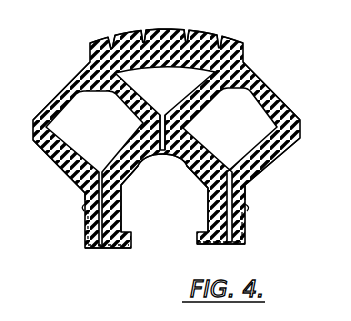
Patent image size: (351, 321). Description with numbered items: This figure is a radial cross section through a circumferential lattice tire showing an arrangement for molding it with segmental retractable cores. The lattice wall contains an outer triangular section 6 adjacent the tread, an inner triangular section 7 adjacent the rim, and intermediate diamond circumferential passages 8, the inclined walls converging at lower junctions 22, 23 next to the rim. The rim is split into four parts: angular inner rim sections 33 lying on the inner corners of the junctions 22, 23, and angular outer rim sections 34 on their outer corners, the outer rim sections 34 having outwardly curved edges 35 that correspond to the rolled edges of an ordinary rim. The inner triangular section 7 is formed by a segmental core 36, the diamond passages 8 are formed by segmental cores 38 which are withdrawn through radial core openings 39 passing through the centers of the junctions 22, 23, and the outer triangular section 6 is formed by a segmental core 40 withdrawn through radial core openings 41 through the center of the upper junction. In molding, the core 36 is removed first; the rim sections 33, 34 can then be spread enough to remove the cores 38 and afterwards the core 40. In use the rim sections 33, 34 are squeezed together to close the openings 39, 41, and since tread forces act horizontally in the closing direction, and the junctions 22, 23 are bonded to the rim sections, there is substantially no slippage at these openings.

The outer triangular circumferential core 6 is at (186, 72).
The segmental core 40 is at (157, 68).
The diamond circumferential passages 8 is at (73, 112).
The radial core openings 41 is at (164, 117).
The segmental cores 38 is at (65, 137).
The radial core openings 39 is at (85, 194).
The outwardly curved edges 35 is at (83, 208).
The junction 22 is at (87, 228).
The junction 23 is at (243, 221).
The outer rim sections 34 is at (87, 247).
The inner rim sections 33 is at (113, 248).
The segmental core 36 is at (168, 198).
The inner triangular circumferential core 7 is at (171, 192).